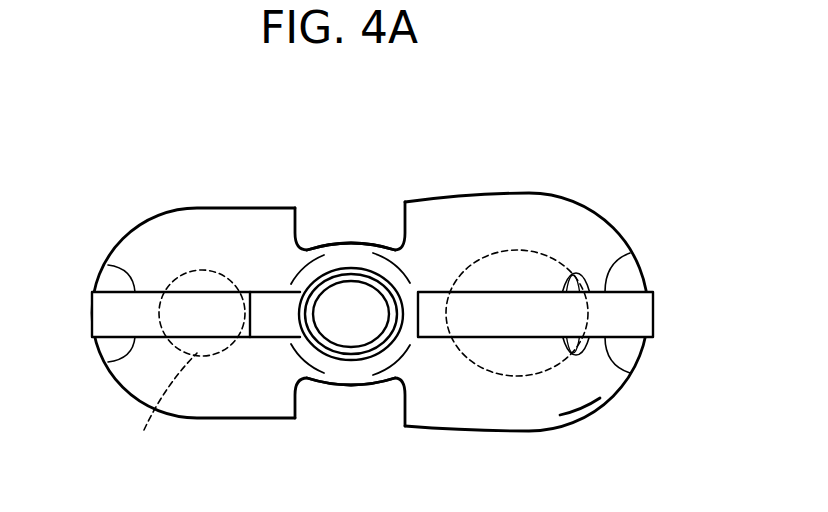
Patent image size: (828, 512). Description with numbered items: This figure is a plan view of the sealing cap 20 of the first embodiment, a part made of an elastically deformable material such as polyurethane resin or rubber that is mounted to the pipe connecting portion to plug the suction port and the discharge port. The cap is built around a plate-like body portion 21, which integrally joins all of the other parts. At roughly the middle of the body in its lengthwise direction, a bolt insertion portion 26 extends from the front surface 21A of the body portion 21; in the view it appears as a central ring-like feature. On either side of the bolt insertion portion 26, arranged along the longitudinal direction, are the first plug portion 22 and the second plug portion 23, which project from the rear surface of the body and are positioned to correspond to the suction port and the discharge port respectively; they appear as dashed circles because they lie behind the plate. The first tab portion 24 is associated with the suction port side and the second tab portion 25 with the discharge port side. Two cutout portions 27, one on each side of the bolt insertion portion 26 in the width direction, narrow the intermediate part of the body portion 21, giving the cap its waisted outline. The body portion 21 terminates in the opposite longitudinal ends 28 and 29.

The sealing cap 20 is at (198, 172).
The plate-like body portion 21 is at (493, 432).
The front surface 21A is at (547, 402).
The first plug portion 22 is at (484, 258).
The second plug portion 23 is at (166, 405).
The first tab portion 24 is at (528, 290).
The second tab portion 25 is at (183, 290).
The bolt insertion portion 26 is at (313, 287).
The cutout portions 27 is at (365, 231).
The end of body portion 28 is at (653, 313).
The end of body portion 29 is at (92, 313).